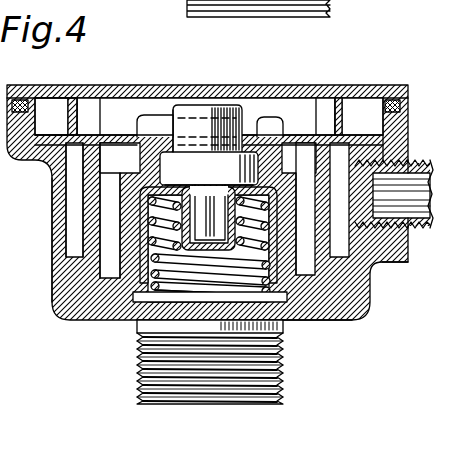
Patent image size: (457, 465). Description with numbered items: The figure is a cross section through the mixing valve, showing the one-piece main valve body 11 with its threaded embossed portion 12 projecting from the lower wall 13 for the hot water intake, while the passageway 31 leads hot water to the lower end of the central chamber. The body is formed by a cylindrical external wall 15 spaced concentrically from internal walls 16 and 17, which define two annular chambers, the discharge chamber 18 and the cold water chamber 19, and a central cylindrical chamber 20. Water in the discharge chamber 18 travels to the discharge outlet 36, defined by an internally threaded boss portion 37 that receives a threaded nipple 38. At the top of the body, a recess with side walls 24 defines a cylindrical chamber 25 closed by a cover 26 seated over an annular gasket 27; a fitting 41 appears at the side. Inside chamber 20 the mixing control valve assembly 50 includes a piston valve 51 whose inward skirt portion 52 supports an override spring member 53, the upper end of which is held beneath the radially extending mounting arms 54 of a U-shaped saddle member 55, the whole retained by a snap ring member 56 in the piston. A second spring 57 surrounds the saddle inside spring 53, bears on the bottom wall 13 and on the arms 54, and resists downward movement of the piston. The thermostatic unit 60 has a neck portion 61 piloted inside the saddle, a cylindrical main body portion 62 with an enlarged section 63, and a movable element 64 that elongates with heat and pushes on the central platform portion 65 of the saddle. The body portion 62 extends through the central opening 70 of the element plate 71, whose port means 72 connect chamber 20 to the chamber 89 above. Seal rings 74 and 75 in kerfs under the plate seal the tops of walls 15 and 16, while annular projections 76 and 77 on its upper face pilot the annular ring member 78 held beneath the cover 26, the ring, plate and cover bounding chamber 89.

The main valve body 11 is at (374, 302).
The threaded embossed portion 12 is at (148, 396).
The lower wall 13 is at (322, 322).
The external wall 15 is at (58, 203).
The internal wall 16 is at (92, 223).
The internal wall 17 is at (130, 252).
The annular discharge chamber 18 is at (75, 178).
The annular cold water chamber 19 is at (110, 190).
The central cylindrical chamber 20 is at (148, 164).
The side walls 24 is at (404, 119).
The cylindrical chamber 25 is at (90, 106).
The cover 26 is at (125, 87).
The annular gasket 27 is at (18, 104).
The passageway 31 is at (125, 321).
The discharge outlet 36 is at (364, 195).
The internally threaded boss portion 37 is at (385, 259).
The threaded nipple 38 is at (427, 222).
The fitting 41 is at (456, 301).
The mixing control valve assembly 50 is at (252, 128).
The piston valve 51 is at (299, 158).
The skirt portion 52 is at (147, 266).
The override spring member 53 is at (268, 245).
The mounting arms 54 is at (166, 184).
The saddle member 55 is at (184, 245).
The snap ring member 56 is at (173, 127).
The second spring 57 is at (200, 247).
The thermostatic unit 60 is at (214, 104).
The neck portion 61 is at (208, 217).
The cylindrical main body portion 62 is at (232, 108).
The enlarged section 63 is at (214, 184).
The movable element 64 is at (287, 298).
The central platform portion 65 is at (243, 253).
The central opening 70 is at (183, 137).
The element plate 71 is at (310, 133).
The port means 72 is at (263, 130).
The annular seal ring 74 is at (92, 135).
The annular seal ring 75 is at (60, 136).
The annular projection 76 is at (337, 110).
The annular projection 77 is at (370, 116).
The annular ring member 78 is at (350, 100).
The chamber 89 is at (160, 106).